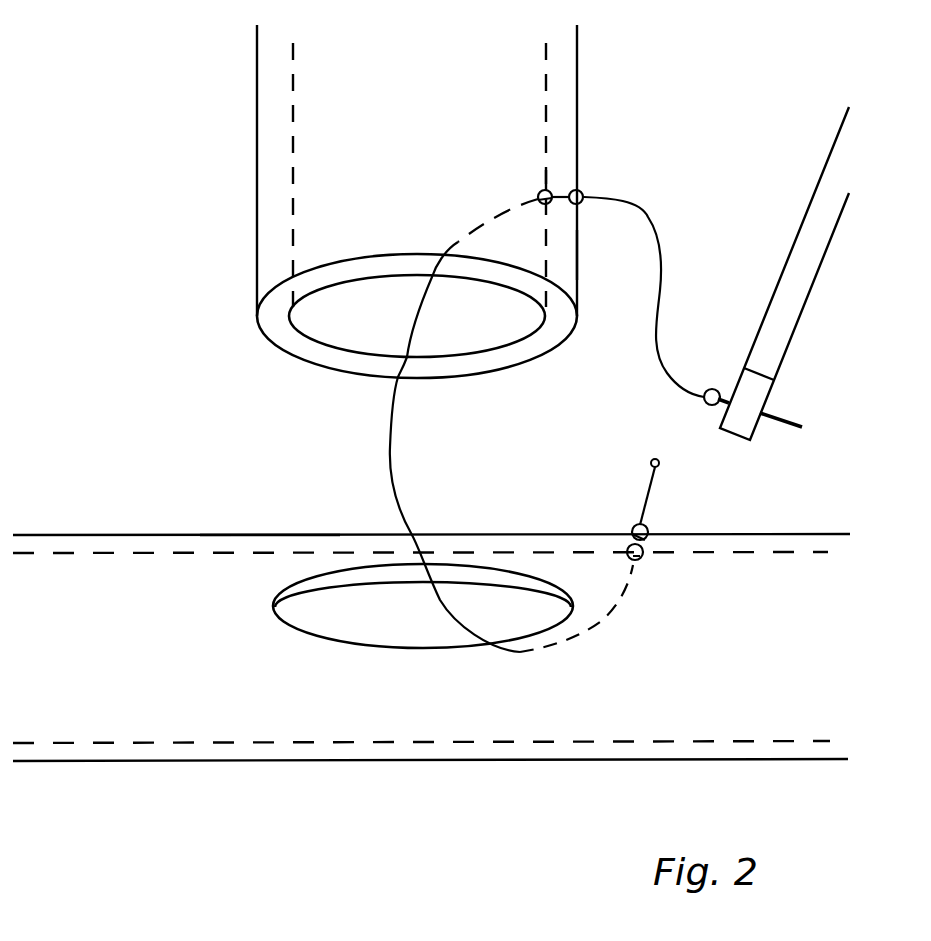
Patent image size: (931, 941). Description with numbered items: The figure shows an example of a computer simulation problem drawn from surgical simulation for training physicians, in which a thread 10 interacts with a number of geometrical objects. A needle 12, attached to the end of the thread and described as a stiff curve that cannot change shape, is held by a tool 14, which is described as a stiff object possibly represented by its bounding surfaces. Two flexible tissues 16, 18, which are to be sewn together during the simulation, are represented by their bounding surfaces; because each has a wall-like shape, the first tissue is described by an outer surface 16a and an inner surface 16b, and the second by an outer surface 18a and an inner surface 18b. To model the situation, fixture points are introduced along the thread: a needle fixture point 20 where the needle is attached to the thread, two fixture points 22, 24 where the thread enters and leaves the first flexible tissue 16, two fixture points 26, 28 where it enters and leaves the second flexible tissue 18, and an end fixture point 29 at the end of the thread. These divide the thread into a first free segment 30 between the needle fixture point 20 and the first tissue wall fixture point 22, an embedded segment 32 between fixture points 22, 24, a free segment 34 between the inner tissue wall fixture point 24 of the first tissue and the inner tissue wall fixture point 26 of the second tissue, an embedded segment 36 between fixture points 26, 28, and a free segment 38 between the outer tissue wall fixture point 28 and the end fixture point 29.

The thread 10 is at (656, 180).
The needle 12 is at (792, 430).
The tool 14 is at (808, 295).
The first flexible tissue 16 is at (307, 80).
The outer surface of first tissue 16a is at (577, 255).
The inner surface of first tissue 16b is at (527, 302).
The second flexible tissue 18 is at (97, 570).
The outer surface of second tissue 18a is at (268, 535).
The inner surface of second tissue 18b is at (367, 588).
The needle fixture point 20 is at (712, 389).
The first tissue wall fixture point 22 is at (590, 185).
The inner tissue wall fixture point of first tissue 24 is at (538, 196).
The inner tissue wall fixture point of second tissue 26 is at (640, 562).
The outer tissue wall fixture point 28 is at (657, 520).
The end fixture point 29 is at (671, 458).
The first free segment 30 is at (660, 335).
The embedded segment 32 is at (558, 193).
The free segment 34 is at (383, 450).
The embedded segment 36 is at (632, 532).
The free segment 38 is at (642, 497).